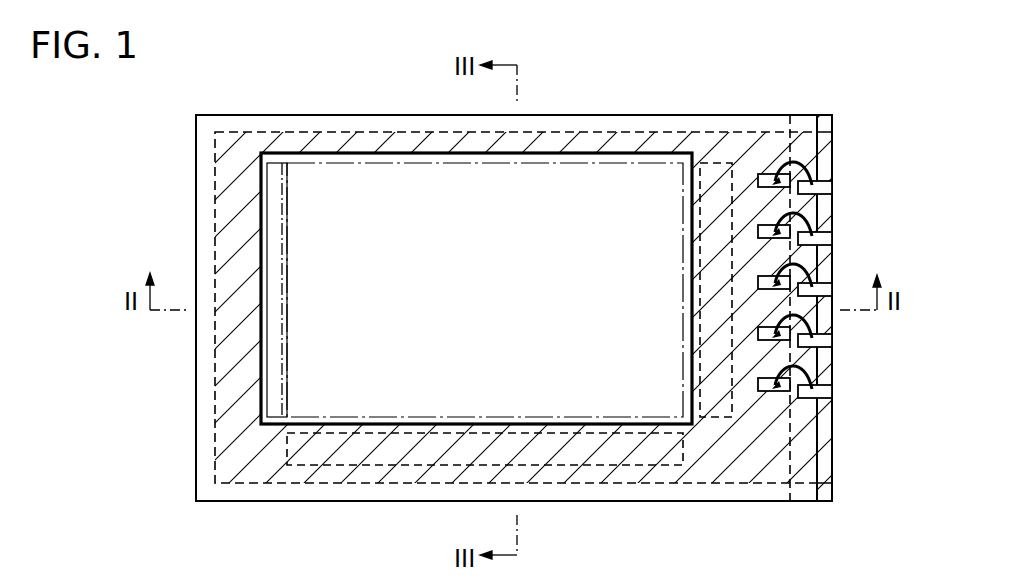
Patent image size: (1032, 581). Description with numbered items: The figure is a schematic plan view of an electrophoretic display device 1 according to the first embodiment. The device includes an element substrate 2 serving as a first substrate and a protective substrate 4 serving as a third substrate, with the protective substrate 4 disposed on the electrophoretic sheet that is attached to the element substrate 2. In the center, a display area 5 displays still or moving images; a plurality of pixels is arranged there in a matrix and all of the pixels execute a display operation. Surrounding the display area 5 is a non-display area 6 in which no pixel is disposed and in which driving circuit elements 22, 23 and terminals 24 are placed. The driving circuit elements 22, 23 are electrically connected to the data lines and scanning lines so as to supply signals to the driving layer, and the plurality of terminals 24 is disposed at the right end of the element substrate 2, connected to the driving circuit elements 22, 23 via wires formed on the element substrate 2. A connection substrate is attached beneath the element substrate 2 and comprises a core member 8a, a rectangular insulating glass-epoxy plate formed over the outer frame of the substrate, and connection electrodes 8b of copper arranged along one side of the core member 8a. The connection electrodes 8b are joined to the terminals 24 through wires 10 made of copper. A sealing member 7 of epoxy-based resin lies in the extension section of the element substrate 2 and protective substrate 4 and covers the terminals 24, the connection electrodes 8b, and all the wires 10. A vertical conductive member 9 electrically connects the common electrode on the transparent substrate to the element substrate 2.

The electrophoretic display device 1 is at (875, 57).
The element substrate 2 is at (790, 132).
The protective substrate 4 is at (817, 116).
The display area 5 is at (390, 180).
The non-display area 6 is at (702, 140).
The sealing member 7 is at (749, 143).
The core member 8a is at (828, 427).
The connection electrodes 8b is at (833, 386).
The vertical conductive member 9 is at (273, 260).
The wires 10 is at (810, 165).
The driving circuit element 22 is at (713, 418).
The driving circuit element 23 is at (384, 456).
The terminals 24 is at (767, 387).